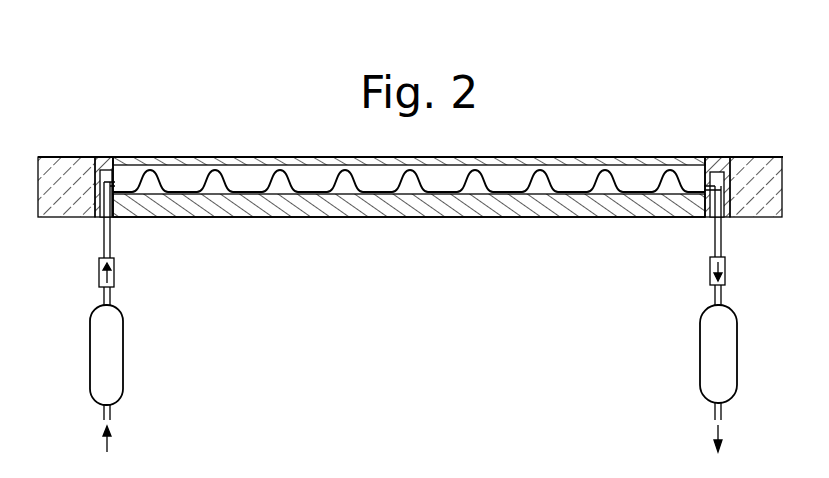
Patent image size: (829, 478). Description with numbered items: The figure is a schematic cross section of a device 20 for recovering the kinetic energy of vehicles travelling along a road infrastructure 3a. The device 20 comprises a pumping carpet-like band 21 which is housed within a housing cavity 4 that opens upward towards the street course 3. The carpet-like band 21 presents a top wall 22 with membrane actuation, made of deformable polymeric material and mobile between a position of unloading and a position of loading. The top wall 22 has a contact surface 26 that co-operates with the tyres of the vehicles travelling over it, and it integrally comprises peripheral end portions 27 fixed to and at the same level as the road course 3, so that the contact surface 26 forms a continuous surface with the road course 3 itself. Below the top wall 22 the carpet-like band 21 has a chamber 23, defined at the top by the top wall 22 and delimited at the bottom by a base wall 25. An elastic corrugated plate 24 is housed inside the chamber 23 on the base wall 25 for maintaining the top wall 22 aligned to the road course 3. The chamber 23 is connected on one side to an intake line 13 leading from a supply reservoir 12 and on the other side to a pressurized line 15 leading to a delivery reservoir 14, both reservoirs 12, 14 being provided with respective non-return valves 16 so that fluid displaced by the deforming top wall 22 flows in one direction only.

The street course 3 is at (72, 157).
The road infrastructure 3a is at (755, 147).
The housing cavity 4 is at (110, 157).
The pumping carpet-like band 21 is at (228, 157).
The top wall 22 is at (308, 157).
The contact surface 26 is at (542, 157).
The peripheral end portions 27 is at (122, 157).
The elastic corrugated plate 24 is at (287, 186).
The chamber 23 is at (398, 184).
The base wall 25 is at (517, 216).
The intake line 13 is at (110, 234).
The non-return valve 16 is at (114, 278).
The supply reservoir 12 is at (115, 375).
The pressurized line 15 is at (715, 233).
The delivery reservoir 14 is at (710, 353).
The device 20 is at (383, 355).